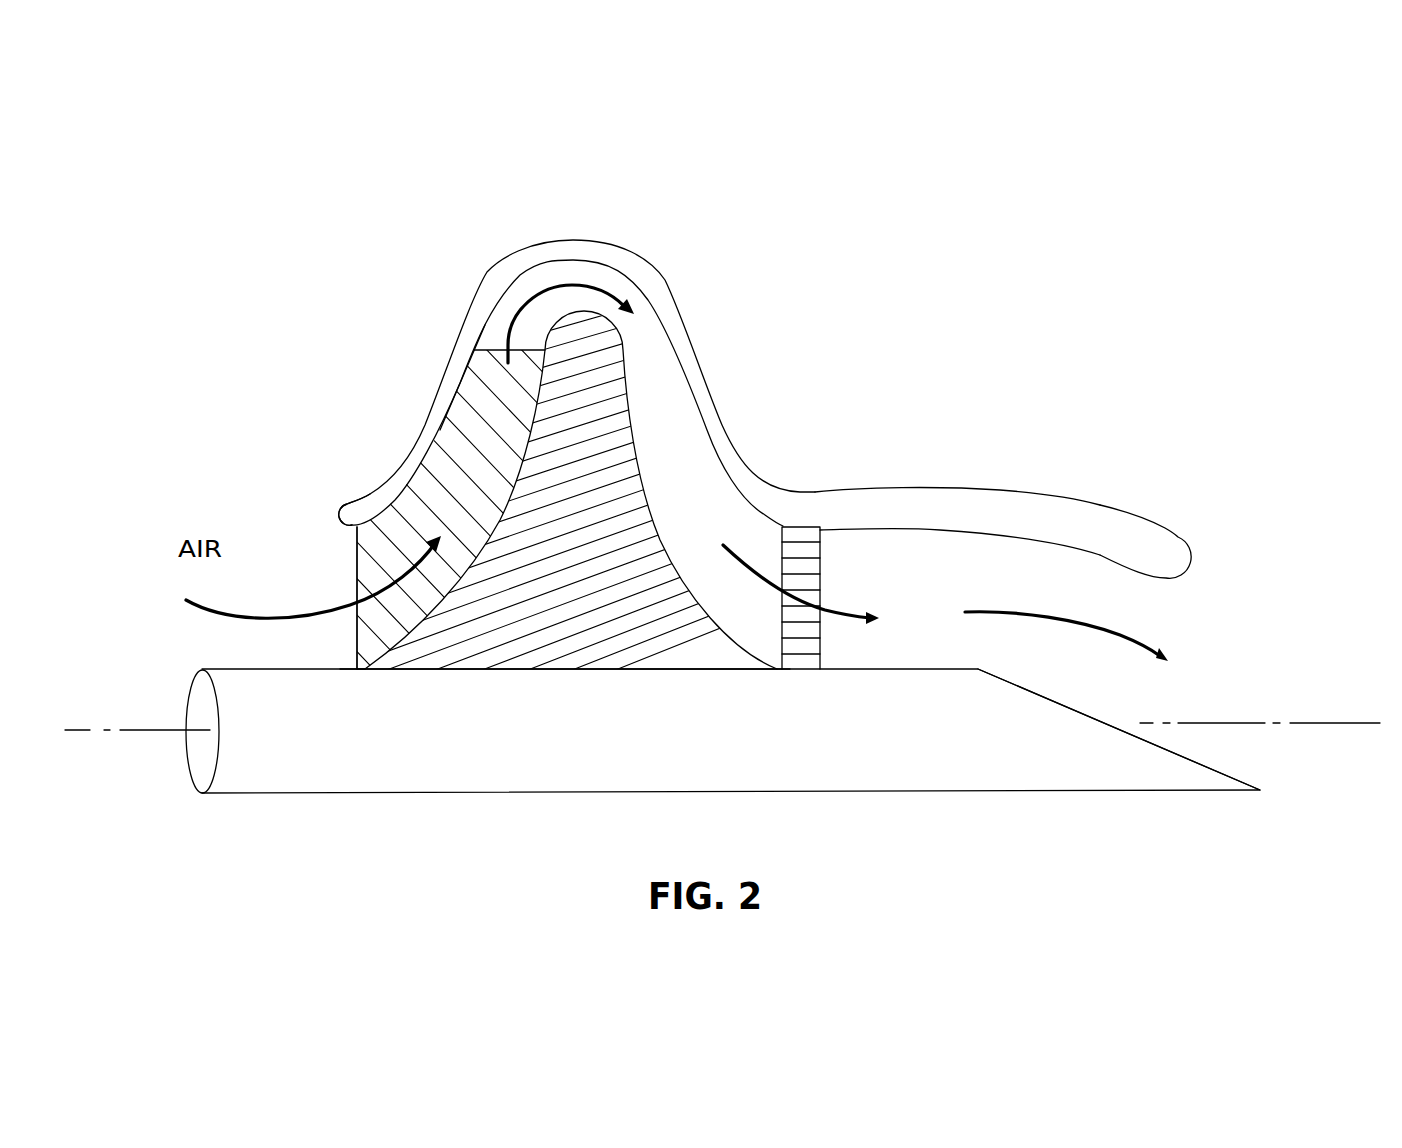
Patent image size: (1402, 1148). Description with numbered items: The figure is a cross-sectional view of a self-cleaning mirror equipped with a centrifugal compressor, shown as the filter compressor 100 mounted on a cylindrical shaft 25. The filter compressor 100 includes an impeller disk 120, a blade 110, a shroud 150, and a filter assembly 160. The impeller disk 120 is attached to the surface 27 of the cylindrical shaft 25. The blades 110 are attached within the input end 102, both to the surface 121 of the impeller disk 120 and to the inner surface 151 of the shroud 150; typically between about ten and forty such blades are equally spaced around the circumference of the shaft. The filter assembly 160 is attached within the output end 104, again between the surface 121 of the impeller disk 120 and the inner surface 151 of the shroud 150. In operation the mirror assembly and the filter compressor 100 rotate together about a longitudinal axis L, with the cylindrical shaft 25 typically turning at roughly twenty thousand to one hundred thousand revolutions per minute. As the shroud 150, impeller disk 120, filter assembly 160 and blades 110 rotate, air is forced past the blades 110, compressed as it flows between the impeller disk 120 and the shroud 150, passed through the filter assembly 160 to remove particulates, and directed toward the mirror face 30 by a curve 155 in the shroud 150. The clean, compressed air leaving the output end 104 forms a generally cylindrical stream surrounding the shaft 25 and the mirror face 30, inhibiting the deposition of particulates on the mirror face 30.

The filter compressor 100 is at (709, 222).
The input end 102 is at (357, 548).
The output end 104 is at (1023, 563).
The blade 110 is at (443, 460).
The impeller disk 120 is at (610, 420).
The surface of impeller disk 121 is at (507, 523).
The shroud 150 is at (484, 283).
The inner surface of shroud 151 is at (457, 405).
The curve in shroud 155 is at (1160, 547).
The filter assembly 160 is at (820, 565).
The cylindrical shaft 25 is at (972, 773).
The surface of cylindrical shaft 27 is at (257, 669).
The mirror face 30 is at (1110, 722).
The longitudinal axis L is at (1318, 722).